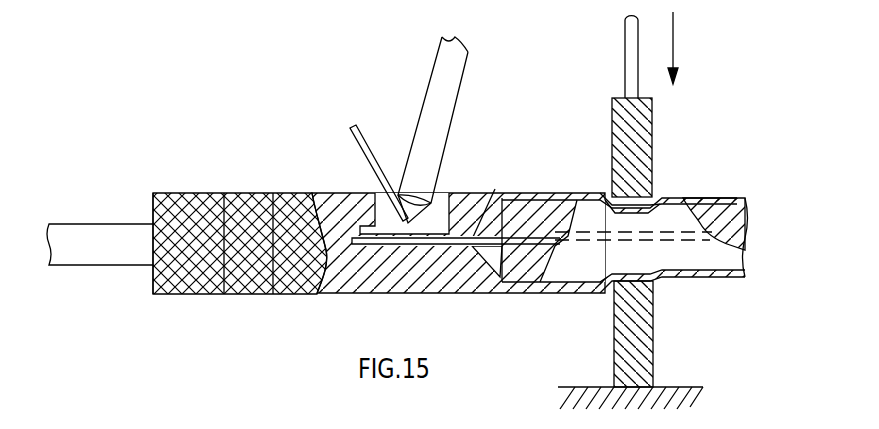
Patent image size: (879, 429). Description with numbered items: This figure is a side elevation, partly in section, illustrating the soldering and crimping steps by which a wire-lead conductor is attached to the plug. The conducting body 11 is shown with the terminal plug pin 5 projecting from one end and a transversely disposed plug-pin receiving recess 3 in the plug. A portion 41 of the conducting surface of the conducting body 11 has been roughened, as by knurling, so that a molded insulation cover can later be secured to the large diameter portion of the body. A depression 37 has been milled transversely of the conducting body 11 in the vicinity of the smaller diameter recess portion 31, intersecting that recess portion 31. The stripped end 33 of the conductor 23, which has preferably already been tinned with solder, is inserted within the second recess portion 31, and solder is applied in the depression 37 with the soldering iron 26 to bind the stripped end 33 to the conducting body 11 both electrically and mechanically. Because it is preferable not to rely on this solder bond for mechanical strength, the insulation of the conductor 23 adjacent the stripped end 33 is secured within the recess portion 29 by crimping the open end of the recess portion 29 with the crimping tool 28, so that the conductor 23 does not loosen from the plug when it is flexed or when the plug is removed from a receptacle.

The plug-pin receiving recess 3 is at (268, 201).
The terminal plug pin 5 is at (90, 223).
The conducting body 11 is at (353, 294).
The conductor 23 is at (723, 197).
The soldering iron 26 is at (445, 95).
The crimping tool 28 is at (643, 133).
The recess portion 29 is at (570, 197).
The smaller diameter recess portion 31 is at (455, 246).
The stripped end 33 is at (490, 202).
The depression 37 is at (447, 205).
The roughened portion 41 is at (203, 285).